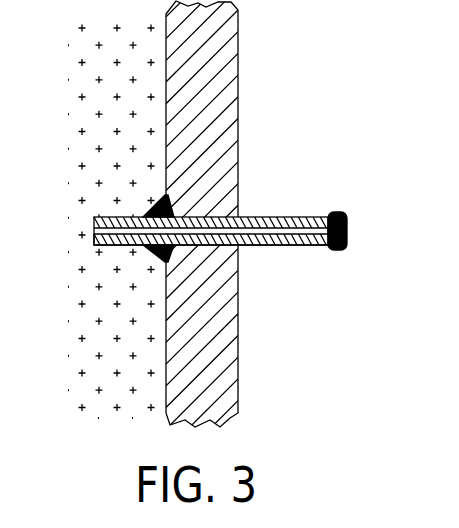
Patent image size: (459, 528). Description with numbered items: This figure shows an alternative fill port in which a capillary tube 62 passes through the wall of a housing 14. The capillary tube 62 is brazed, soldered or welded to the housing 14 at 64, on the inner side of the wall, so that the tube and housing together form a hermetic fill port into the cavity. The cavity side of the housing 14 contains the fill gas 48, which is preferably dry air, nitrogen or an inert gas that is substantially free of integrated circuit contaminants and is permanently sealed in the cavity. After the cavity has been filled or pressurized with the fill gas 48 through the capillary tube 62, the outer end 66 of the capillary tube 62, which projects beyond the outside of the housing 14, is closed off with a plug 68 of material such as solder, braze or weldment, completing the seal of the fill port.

The fill gas 48 is at (138, 59).
The housing 14 is at (240, 77).
The capillary tube 62 is at (258, 208).
The braze, solder or weld joint 64 is at (150, 213).
The outer end of the capillary tube 66 is at (320, 248).
The plug 68 is at (342, 250).